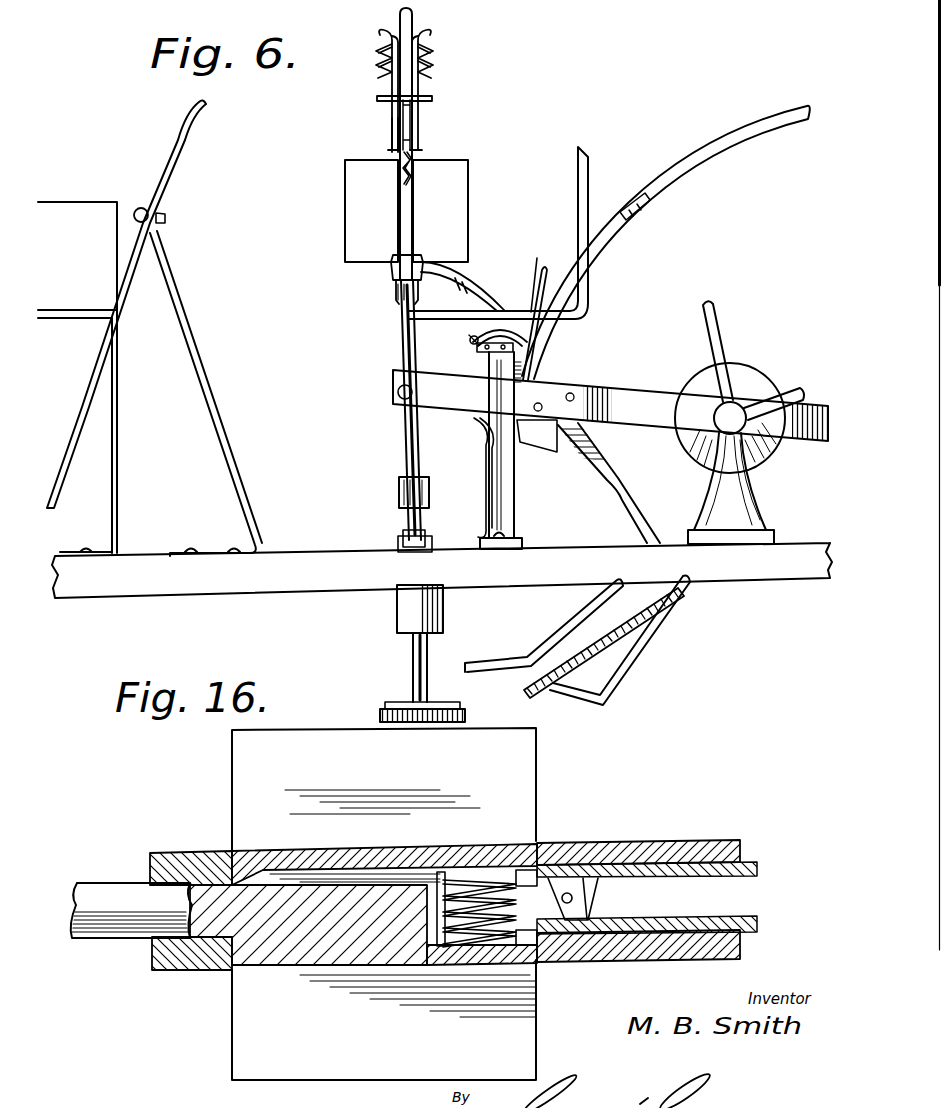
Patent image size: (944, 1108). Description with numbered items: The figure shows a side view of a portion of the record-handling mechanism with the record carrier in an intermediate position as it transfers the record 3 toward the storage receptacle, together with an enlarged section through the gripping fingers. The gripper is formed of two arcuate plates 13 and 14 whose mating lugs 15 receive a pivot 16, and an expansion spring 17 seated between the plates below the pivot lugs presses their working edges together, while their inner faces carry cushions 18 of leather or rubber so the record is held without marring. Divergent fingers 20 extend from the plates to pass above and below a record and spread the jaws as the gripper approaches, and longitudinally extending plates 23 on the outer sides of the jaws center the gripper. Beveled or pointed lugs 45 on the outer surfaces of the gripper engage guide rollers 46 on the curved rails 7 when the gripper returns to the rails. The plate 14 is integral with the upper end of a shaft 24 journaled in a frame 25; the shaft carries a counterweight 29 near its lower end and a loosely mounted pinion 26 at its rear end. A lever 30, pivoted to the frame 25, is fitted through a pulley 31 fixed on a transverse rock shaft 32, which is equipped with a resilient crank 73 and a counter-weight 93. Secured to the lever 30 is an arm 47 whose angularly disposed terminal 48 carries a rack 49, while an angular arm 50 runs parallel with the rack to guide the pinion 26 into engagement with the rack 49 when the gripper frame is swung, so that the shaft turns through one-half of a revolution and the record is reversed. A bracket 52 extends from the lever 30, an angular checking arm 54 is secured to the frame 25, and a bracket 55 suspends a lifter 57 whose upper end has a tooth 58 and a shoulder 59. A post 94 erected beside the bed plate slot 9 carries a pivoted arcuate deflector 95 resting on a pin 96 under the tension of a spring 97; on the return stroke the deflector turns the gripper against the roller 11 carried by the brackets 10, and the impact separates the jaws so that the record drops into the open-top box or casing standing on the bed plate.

In FIG. 6, the record 3 is at (412, 22).
In FIG. 6, the divergent fingers 20 is at (386, 36).
In FIG. 6, the beveled or pointed lugs 45 is at (380, 70).
In FIG. 6, the cushions 18 is at (400, 119).
In FIG. 16, the cushions 18 is at (694, 917).
In FIG. 6, the arcuate plate 14 is at (418, 128).
In FIG. 16, the arcuate plate 14 is at (504, 940).
In FIG. 6, the arcuate plate 13 is at (393, 139).
In FIG. 16, the arcuate plate 13 is at (458, 850).
In FIG. 6, the expansion spring 17 is at (410, 172).
In FIG. 16, the expansion spring 17 is at (438, 950).
In FIG. 6, the longitudinally extending plates 23 is at (406, 211).
In FIG. 16, the longitudinally extending plates 23 is at (538, 772).
In FIG. 6, the bracket 55 is at (465, 285).
In FIG. 6, the bracket 52 is at (481, 282).
In FIG. 6, the angular checking arm 54 is at (589, 300).
In FIG. 6, the rails 7 is at (706, 167).
In FIG. 6, the guide rollers 46 is at (646, 212).
In FIG. 6, the shoulder 59 is at (538, 264).
In FIG. 6, the tooth 58 is at (544, 290).
In FIG. 6, the deflector 95 is at (505, 325).
In FIG. 6, the pin 96 is at (495, 371).
In FIG. 6, the spring 97 is at (470, 342).
In FIG. 6, the post 94 is at (516, 493).
In FIG. 6, the lever 30 is at (616, 396).
In FIG. 6, the pulley or disk 31 is at (760, 452).
In FIG. 6, the shaft 32 is at (722, 428).
In FIG. 6, the resilient crank 73 is at (721, 322).
In FIG. 6, the counter-weight 93 is at (801, 392).
In FIG. 6, the arm 47 is at (600, 457).
In FIG. 6, the lifter 57 is at (481, 433).
In FIG. 6, the frame 25 is at (403, 453).
In FIG. 6, the box or casing 9 is at (77, 377).
In FIG. 6, the brackets 10 is at (120, 302).
In FIG. 6, the roller 11 is at (139, 208).
In FIG. 6, the counterweight 29 is at (444, 611).
In FIG. 6, the shaft 24 is at (414, 669).
In FIG. 16, the shaft 24 is at (104, 900).
In FIG. 6, the pinion 26 is at (382, 716).
In FIG. 6, the angular arm 50 is at (558, 629).
In FIG. 6, the rack 49 is at (598, 656).
In FIG. 6, the angularly disposed terminal 48 is at (658, 637).
In FIG. 16, the pivot 16 is at (561, 899).
In FIG. 16, the mating lugs 15 is at (590, 898).